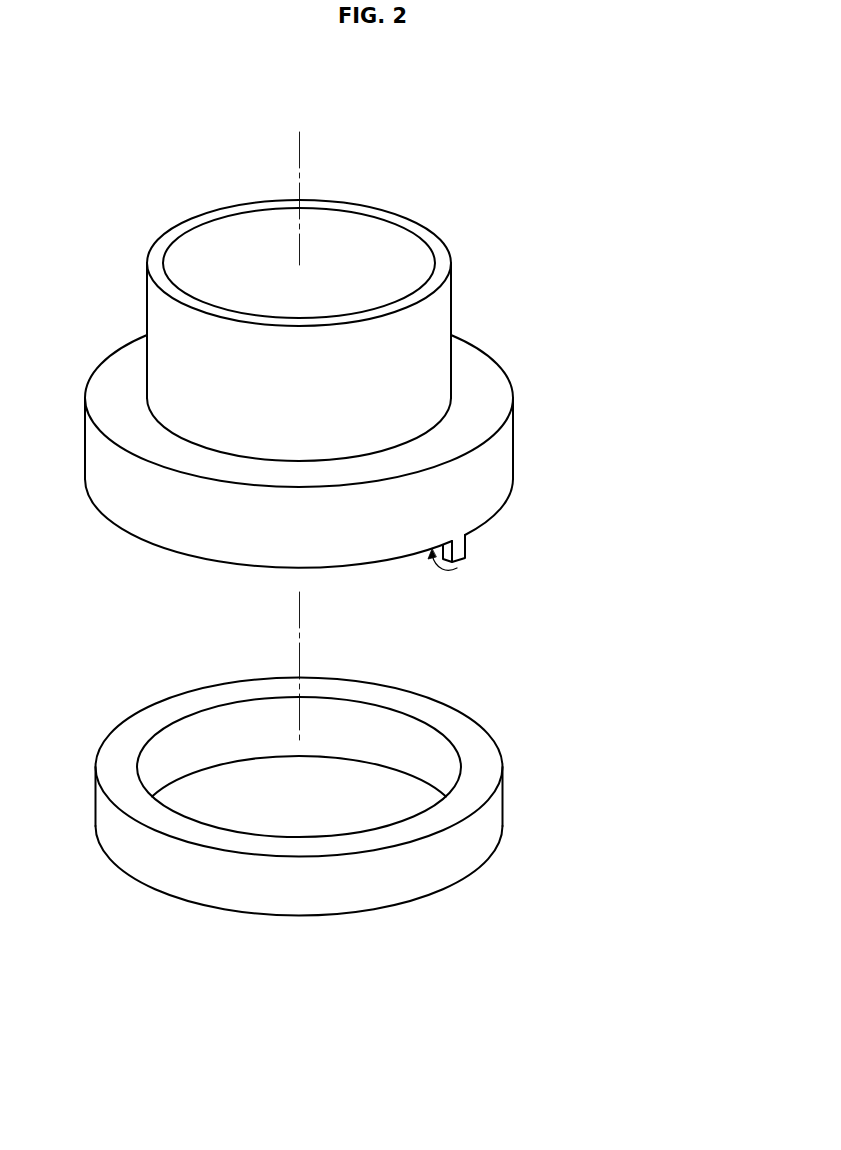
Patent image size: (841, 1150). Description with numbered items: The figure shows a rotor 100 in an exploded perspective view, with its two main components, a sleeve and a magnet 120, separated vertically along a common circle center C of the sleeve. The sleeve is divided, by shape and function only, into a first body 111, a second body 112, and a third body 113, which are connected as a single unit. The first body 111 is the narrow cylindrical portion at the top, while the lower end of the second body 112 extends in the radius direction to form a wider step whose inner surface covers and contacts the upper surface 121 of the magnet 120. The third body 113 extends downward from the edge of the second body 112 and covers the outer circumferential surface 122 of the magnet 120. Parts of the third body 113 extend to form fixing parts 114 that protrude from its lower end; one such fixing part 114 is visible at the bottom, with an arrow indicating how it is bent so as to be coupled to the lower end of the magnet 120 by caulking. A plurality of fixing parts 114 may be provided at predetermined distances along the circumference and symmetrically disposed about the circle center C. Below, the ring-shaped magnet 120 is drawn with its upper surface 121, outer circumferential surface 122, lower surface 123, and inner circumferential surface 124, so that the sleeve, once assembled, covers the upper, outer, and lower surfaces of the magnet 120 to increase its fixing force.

The rotor 100 is at (97, 95).
The first body 111 is at (428, 353).
The second body 112 is at (473, 412).
The third body 113 is at (513, 458).
The fixing part 114 is at (467, 541).
The magnet 120 is at (648, 757).
The upper surface 121 is at (480, 760).
The outer circumferential surface 122 is at (470, 848).
The lower surface 123 is at (410, 775).
The inner circumferential surface 124 is at (377, 808).
The circle center C is at (301, 147).